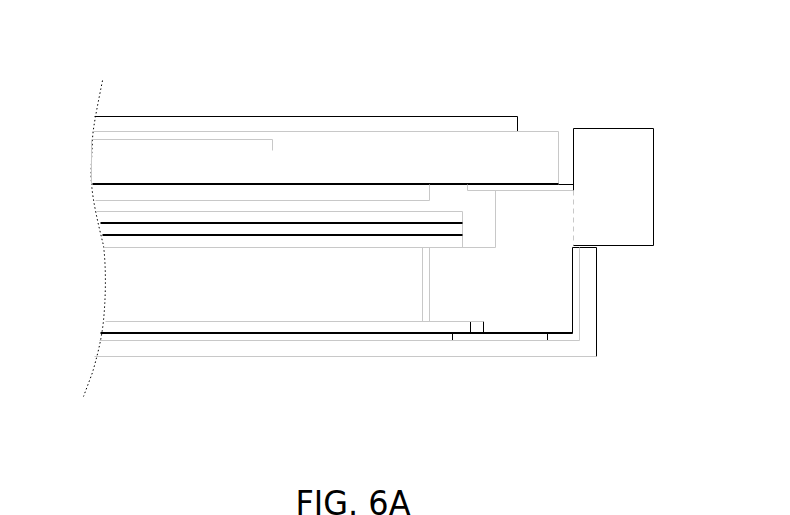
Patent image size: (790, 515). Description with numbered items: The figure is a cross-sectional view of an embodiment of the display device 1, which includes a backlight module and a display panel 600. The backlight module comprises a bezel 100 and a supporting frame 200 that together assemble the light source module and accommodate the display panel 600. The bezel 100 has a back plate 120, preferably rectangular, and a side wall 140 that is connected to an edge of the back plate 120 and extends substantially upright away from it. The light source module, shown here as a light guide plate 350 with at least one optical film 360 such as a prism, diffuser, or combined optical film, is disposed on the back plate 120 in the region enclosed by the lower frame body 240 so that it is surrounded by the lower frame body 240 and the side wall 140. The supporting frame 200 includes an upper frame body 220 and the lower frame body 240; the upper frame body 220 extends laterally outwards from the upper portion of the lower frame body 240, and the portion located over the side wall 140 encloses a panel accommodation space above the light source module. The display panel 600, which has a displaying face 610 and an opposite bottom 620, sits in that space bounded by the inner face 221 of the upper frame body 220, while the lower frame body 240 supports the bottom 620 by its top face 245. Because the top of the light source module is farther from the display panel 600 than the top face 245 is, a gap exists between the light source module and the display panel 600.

The display device 1 is at (94, 58).
The bezel 100 is at (605, 273).
The back plate 120 is at (512, 355).
The side wall 140 is at (598, 315).
The supporting frame 200 is at (714, 150).
The upper frame body 220 is at (615, 162).
The inner face 221 is at (574, 128).
The lower frame body 240 is at (560, 212).
The top face 245 is at (563, 189).
The light guide plate 350 is at (113, 285).
The optical film 360 is at (94, 231).
The display panel 600 is at (540, 143).
The displaying face 610 is at (482, 115).
The bottom 620 is at (393, 201).